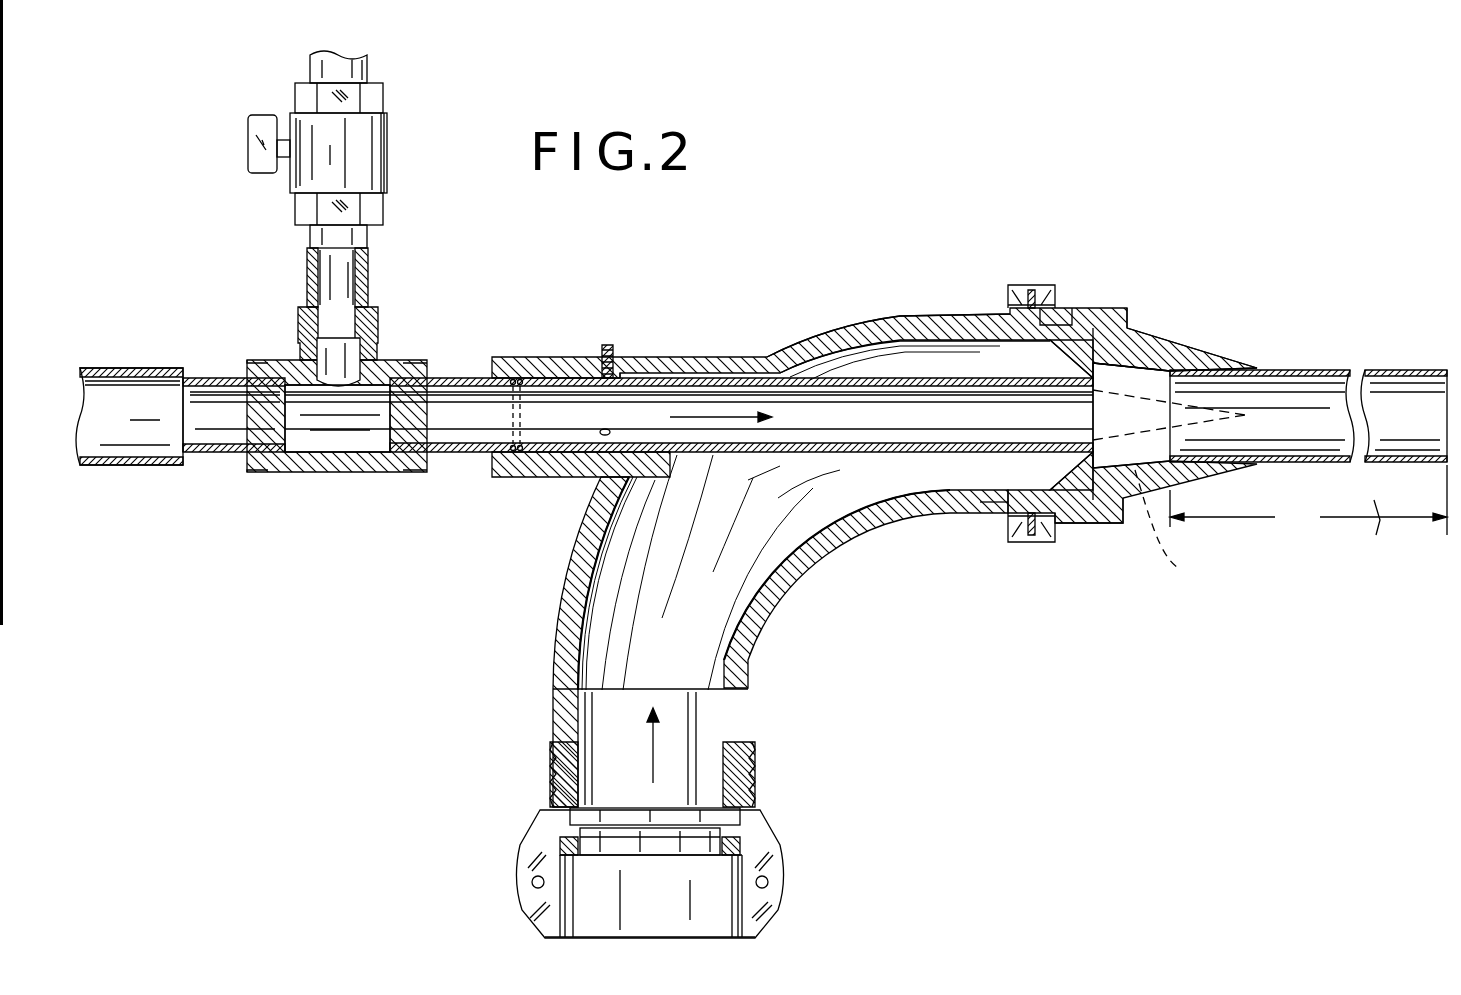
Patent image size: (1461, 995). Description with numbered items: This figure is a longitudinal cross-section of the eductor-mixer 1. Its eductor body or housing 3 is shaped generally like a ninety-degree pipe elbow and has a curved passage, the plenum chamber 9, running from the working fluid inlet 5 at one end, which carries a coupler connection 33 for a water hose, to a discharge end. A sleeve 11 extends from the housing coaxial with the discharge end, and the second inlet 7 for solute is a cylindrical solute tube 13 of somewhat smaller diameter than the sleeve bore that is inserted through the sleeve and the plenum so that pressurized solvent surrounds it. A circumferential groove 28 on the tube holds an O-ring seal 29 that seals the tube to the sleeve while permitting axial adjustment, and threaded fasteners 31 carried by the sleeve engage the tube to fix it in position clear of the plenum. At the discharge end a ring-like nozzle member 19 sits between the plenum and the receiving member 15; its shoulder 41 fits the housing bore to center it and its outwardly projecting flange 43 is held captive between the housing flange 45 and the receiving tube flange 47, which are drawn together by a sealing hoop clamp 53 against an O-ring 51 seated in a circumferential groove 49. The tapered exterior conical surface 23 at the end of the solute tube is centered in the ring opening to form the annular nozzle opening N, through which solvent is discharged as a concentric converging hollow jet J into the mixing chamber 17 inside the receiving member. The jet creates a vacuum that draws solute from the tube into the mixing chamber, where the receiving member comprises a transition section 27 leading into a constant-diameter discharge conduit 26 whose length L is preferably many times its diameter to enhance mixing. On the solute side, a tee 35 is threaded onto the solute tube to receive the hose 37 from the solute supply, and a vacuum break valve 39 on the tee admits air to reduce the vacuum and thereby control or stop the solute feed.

The eductor-mixer 1 is at (788, 246).
The eductor body or housing 3 is at (830, 548).
The working fluid inlet 5 is at (745, 797).
The second inlet 7 is at (483, 412).
The plenum chamber 9 is at (973, 352).
The sleeve 11 is at (670, 353).
The solute tube 13 is at (457, 462).
The receiving member 15 is at (1398, 348).
The mixing chamber 17 is at (1150, 348).
The nozzle member 19 is at (1160, 340).
The exterior conical surface 23 is at (1010, 317).
The discharge conduit 26 is at (1320, 370).
The transition section 27 is at (1180, 352).
The circumferential groove 28 is at (518, 452).
The O-ring seal 29 is at (507, 450).
The threaded fasteners 31 is at (606, 345).
The coupler connection 33 is at (762, 850).
The tee 35 is at (292, 470).
The hose 37 is at (115, 470).
The vacuum break valve 39 is at (390, 157).
The shoulder 41 is at (1075, 312).
The outwardly projecting flange 43 is at (1125, 330).
The housing flange 45 is at (1025, 300).
The receiving tube flange 47 is at (1042, 300).
The circumferential groove 49 is at (1055, 540).
The O-ring 51 is at (1033, 543).
The sealing hoop clamp 53 is at (1010, 535).
The hollow jet J is at (1169, 487).
The annular nozzle opening N is at (1117, 470).
The length of the conduit L is at (1308, 500).